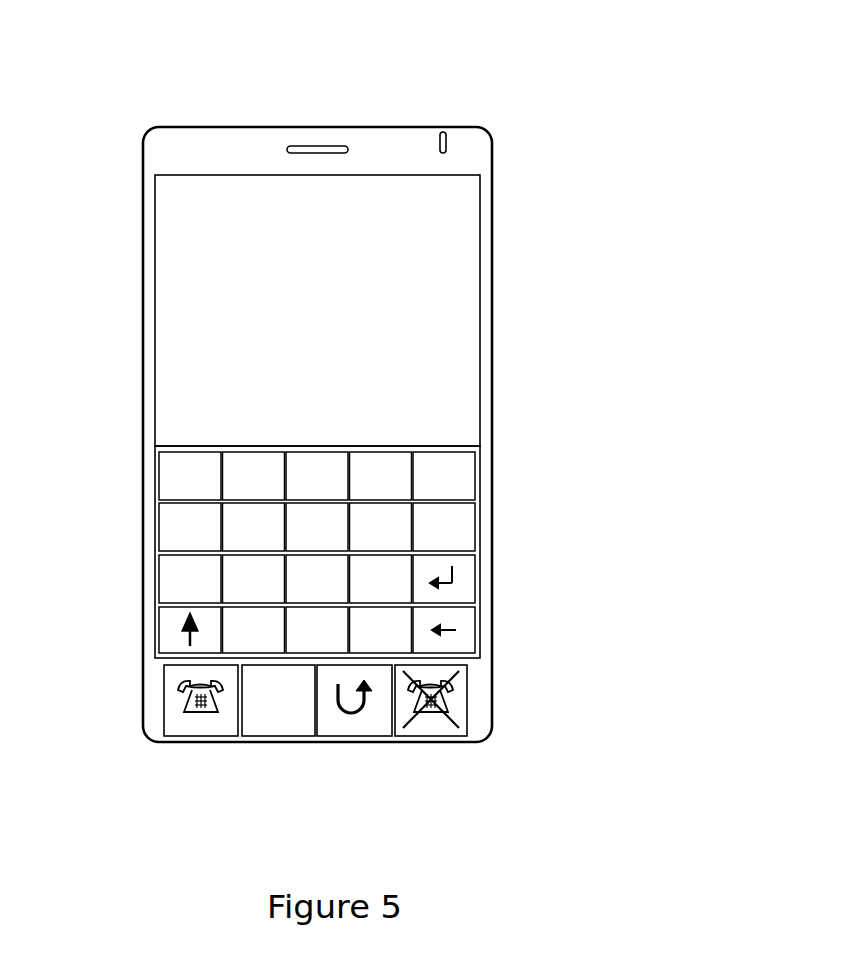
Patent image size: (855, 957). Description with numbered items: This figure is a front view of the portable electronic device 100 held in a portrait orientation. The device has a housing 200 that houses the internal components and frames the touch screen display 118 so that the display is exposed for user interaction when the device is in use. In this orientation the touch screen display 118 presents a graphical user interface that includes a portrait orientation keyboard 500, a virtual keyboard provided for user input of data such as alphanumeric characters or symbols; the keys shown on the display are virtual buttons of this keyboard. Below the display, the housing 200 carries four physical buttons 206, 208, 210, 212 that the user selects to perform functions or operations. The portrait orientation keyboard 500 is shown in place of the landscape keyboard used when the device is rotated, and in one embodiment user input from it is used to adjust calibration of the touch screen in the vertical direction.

The portable electronic device 100 is at (545, 68).
The housing 200 is at (485, 415).
The touch screen display 118 is at (473, 592).
The portrait orientation keyboard 500 is at (162, 630).
The physical button 206 is at (208, 718).
The physical button 208 is at (292, 718).
The physical button 210 is at (368, 720).
The physical button 212 is at (435, 720).